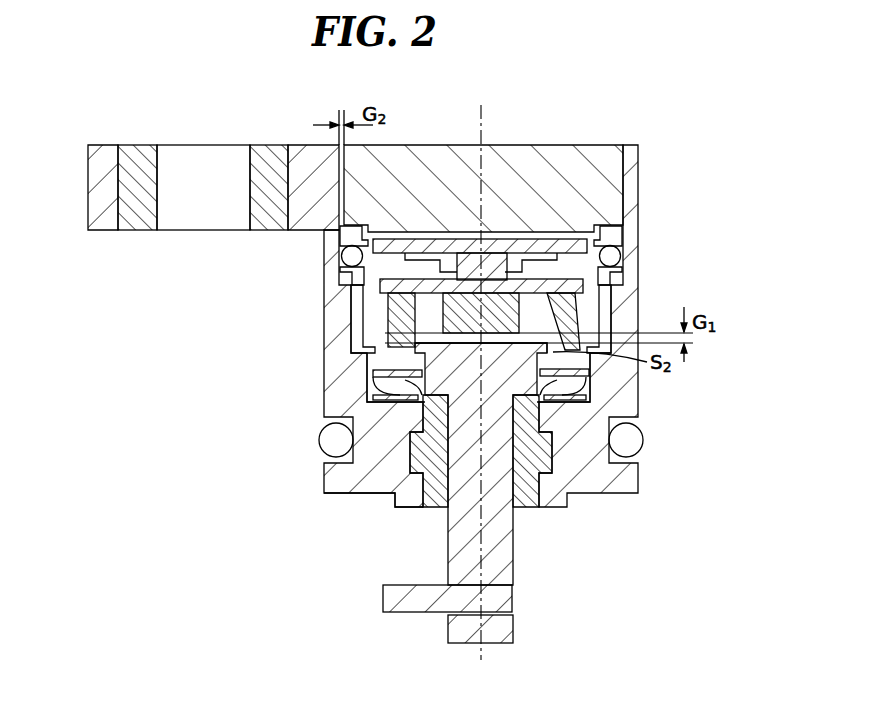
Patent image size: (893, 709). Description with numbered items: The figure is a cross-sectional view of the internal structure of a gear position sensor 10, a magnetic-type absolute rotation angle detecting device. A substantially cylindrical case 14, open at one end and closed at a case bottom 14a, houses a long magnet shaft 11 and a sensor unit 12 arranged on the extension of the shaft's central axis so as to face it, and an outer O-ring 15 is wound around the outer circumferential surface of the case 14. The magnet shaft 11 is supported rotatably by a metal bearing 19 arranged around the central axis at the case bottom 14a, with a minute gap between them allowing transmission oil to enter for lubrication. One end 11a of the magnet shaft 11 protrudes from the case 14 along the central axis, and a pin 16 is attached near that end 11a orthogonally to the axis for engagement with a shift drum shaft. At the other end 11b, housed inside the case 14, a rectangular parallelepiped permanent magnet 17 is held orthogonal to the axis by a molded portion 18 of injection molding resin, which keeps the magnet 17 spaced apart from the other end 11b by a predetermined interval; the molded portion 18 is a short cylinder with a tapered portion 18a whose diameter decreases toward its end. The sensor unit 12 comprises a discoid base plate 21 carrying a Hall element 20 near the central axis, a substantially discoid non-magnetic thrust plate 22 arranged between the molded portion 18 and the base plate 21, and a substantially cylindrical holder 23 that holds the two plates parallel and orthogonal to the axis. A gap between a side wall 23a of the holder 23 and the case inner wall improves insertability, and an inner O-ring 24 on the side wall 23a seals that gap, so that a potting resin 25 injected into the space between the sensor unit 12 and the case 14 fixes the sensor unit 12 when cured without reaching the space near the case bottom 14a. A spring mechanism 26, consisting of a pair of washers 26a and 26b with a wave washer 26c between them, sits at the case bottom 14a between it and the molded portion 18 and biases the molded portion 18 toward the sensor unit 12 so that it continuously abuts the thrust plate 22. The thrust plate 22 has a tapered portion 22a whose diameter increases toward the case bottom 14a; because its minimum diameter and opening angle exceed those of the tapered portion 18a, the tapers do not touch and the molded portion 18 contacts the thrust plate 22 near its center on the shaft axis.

The gear position sensor 10 is at (259, 100).
The magnet shaft 11 is at (514, 551).
The one end of the magnet shaft 11a is at (514, 626).
The other end of the magnet shaft 11b is at (557, 353).
The sensor unit 12 is at (498, 242).
The case 14 is at (639, 165).
The case bottom 14a is at (387, 403).
The outer O-ring 15 is at (328, 438).
The pin 16 is at (415, 613).
The magnet 17 is at (397, 326).
The molded portion 18 is at (445, 322).
The tapered portion of the molded portion 18a is at (578, 300).
The metal bearing 19 is at (433, 500).
The Hall element 20 is at (495, 253).
The base plate 21 is at (545, 238).
The thrust plate 22 is at (535, 270).
The tapered portion of the thrust plate 22a is at (405, 300).
The holder 23 is at (598, 240).
The side wall of the holder 23a is at (339, 263).
The inner O-ring 24 is at (347, 255).
The potting resin 25 is at (594, 160).
The spring mechanism 26 is at (647, 416).
The washer 26a is at (577, 398).
The washer 26b is at (555, 372).
The wave washer 26c is at (645, 440).